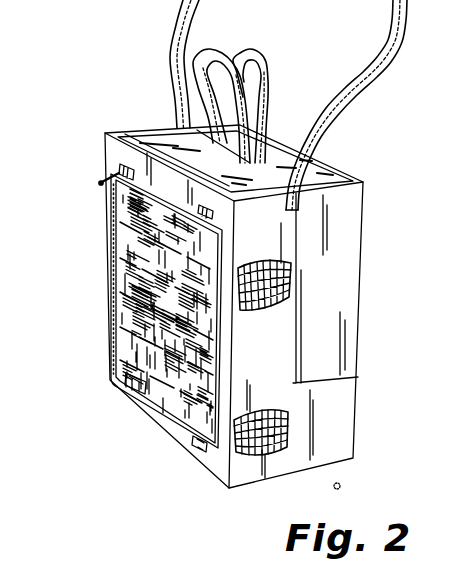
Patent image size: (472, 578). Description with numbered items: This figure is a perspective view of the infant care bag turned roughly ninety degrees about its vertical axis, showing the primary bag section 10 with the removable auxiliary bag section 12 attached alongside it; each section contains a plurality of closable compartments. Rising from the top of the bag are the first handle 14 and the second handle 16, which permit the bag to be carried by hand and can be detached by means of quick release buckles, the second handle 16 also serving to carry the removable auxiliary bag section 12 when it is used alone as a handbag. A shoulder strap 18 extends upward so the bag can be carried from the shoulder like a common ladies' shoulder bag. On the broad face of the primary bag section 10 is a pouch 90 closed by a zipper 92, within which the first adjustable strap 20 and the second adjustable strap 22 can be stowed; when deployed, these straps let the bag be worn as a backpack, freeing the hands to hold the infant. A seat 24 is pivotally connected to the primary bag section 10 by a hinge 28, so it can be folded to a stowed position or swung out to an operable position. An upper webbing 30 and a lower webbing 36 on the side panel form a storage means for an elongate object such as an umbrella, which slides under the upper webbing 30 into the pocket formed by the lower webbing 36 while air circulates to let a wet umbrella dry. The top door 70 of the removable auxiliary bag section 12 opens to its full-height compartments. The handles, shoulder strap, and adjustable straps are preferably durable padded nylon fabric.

The primary bag section 10 is at (333, 438).
The removable auxiliary bag section 12 is at (363, 232).
The first handle 14 is at (198, 55).
The second handle 16 is at (268, 68).
The shoulder strap 18 is at (378, 66).
The first adjustable strap 20 is at (120, 173).
The second adjustable strap 22 is at (212, 209).
The seat 24 is at (301, 351).
The hinge 28 is at (158, 142).
The upper webbing 30 is at (257, 308).
The lower webbing 36 is at (273, 460).
The top door 70 is at (326, 166).
The pouch 90 is at (140, 320).
The zipper 92 is at (113, 231).